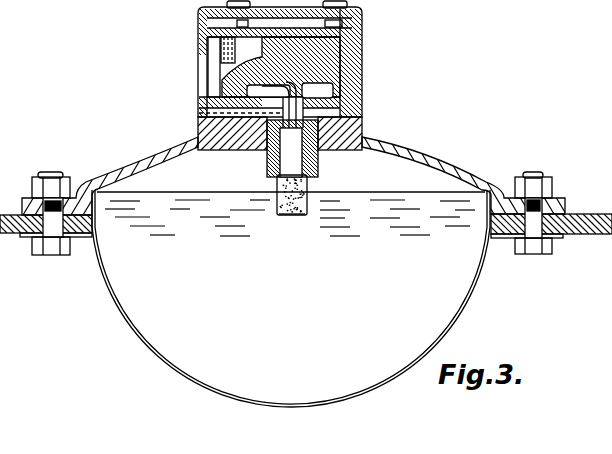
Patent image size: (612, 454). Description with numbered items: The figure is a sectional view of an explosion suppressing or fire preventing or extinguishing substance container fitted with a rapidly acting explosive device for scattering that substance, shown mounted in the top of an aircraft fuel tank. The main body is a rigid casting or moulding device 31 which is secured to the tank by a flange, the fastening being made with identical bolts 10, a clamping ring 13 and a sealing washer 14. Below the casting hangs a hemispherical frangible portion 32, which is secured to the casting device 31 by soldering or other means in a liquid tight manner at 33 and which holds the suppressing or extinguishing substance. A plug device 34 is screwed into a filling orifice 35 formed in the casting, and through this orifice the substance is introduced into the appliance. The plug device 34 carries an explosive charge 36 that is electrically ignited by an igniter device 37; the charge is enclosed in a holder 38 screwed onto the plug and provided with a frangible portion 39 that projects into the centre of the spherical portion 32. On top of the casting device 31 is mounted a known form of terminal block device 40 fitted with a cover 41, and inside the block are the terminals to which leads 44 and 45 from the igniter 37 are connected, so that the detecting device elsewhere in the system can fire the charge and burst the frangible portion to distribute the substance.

The bolts 10 is at (45, 255).
The clamping ring 13 is at (556, 236).
The sealing washer 14 is at (567, 212).
The casting or moulding device 31 is at (440, 162).
The frangible portion 32 is at (470, 303).
The liquid tight joint 33 is at (495, 240).
The plug device 34 is at (362, 95).
The filling orifice 35 is at (362, 125).
The explosive charge 36 is at (295, 190).
The igniter device 37 is at (290, 162).
The holder 38 is at (318, 163).
The frangible portion of holder 39 is at (292, 217).
The terminal block device 40 is at (362, 56).
The cover 41 is at (362, 13).
The lead 44 is at (222, 99).
The lead 45 is at (199, 114).